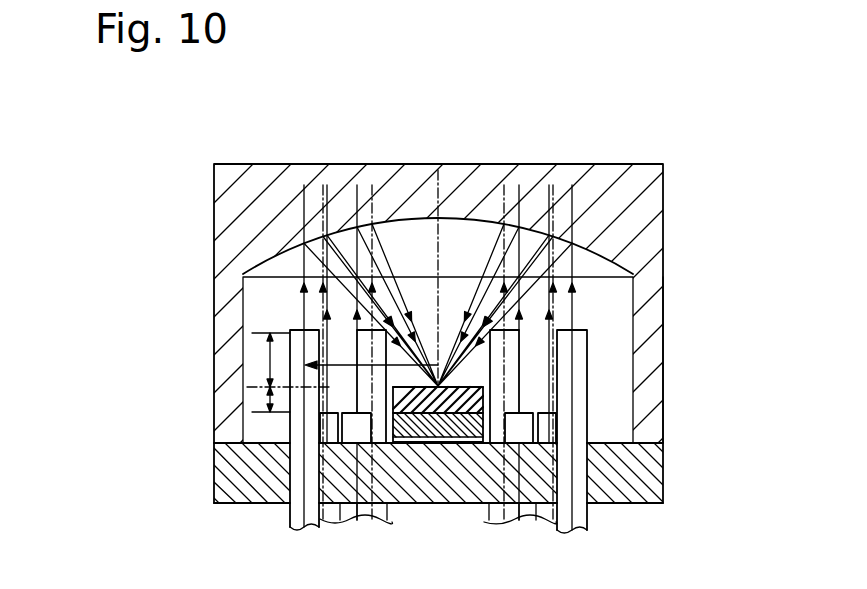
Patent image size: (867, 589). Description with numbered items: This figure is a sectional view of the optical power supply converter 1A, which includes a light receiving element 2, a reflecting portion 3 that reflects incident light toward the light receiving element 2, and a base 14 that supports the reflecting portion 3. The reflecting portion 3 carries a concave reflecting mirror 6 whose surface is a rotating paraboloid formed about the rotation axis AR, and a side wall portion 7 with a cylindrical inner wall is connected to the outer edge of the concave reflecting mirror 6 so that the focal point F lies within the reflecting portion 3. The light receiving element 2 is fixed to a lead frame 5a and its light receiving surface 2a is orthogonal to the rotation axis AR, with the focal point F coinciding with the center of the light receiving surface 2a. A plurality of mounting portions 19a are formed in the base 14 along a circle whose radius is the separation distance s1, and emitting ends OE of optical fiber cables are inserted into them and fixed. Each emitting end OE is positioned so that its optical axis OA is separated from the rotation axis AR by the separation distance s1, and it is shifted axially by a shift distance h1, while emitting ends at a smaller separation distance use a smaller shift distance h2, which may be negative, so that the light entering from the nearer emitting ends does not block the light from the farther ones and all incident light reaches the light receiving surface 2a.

The optical power supply converter 1A is at (177, 129).
The reflecting portion 3 is at (268, 163).
The concave reflecting mirror 6 is at (603, 262).
The side wall portion 7 is at (665, 410).
The base 14 is at (214, 485).
The mounting portion 19a is at (288, 517).
The light receiving element 2 is at (393, 396).
The light receiving surface 2a is at (466, 385).
The lead frame 5a is at (448, 432).
The rotation axis AR is at (438, 232).
The focal point F is at (445, 335).
The separation distance s1 is at (350, 367).
The shift distance h1 is at (264, 349).
The shift distance h2 is at (268, 398).
The optical axis OA is at (300, 364).
The emitting end OE is at (291, 427).